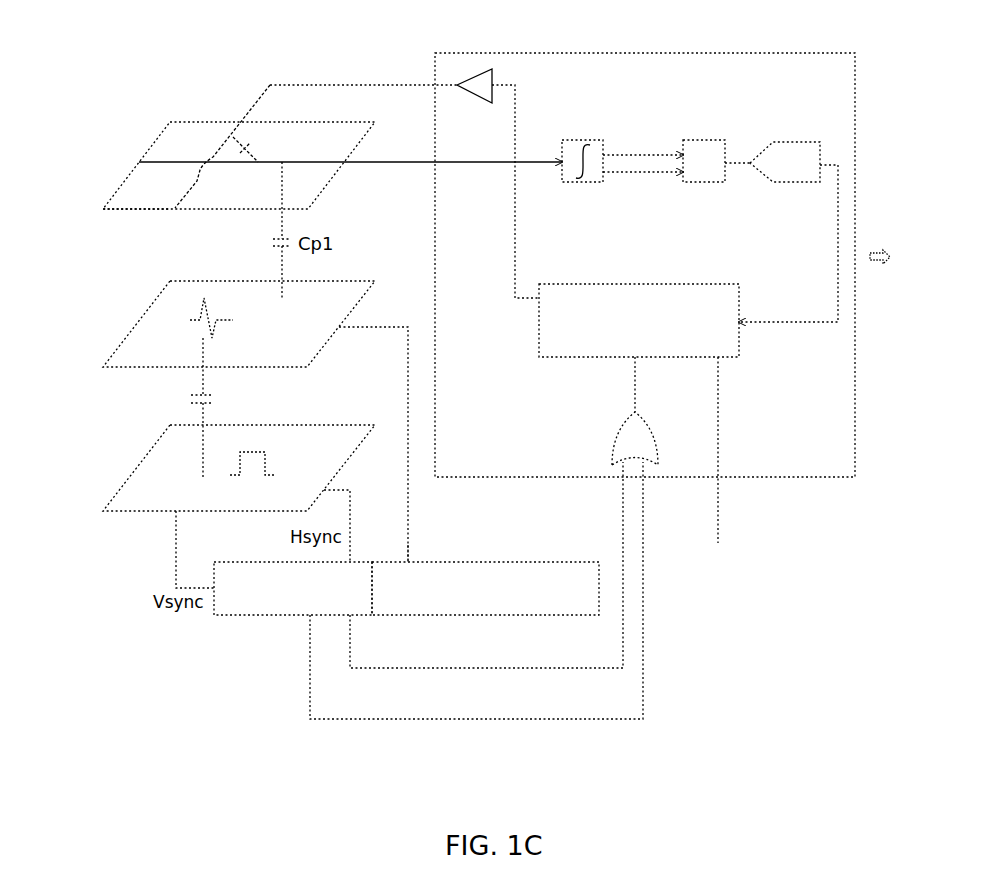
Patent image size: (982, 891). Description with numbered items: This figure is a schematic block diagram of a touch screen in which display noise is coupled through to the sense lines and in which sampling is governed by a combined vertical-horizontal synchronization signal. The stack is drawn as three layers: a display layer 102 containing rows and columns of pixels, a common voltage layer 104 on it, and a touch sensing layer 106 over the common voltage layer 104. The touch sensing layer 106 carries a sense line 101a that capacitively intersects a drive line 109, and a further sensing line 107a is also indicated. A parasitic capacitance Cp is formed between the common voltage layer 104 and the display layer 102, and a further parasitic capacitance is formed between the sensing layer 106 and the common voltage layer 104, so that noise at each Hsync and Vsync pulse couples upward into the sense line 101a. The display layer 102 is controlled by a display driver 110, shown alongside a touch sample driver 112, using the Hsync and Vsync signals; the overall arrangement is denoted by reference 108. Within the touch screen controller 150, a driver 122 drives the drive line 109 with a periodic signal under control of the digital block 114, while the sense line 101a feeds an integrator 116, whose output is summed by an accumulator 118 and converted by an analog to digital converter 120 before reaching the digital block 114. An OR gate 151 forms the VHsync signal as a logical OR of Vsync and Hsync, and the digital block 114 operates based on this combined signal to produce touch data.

The sense line 101a is at (148, 162).
The display layer 102 is at (117, 492).
The common voltage layer 104 is at (138, 317).
The touch sensing layer 106 is at (137, 223).
The touch sensing line 107a is at (200, 152).
The display device 108 is at (463, 531).
The drive line 109 is at (172, 206).
The display driver 110 is at (278, 616).
The touch sample driver 112 is at (442, 616).
The digital block 114 is at (567, 358).
The integrator 116 is at (580, 183).
The accumulator 118 is at (698, 184).
The analog to digital converter 120 is at (793, 184).
The driver 122 is at (466, 91).
The touch screen controller 150 is at (830, 478).
The OR gate 151 is at (612, 447).